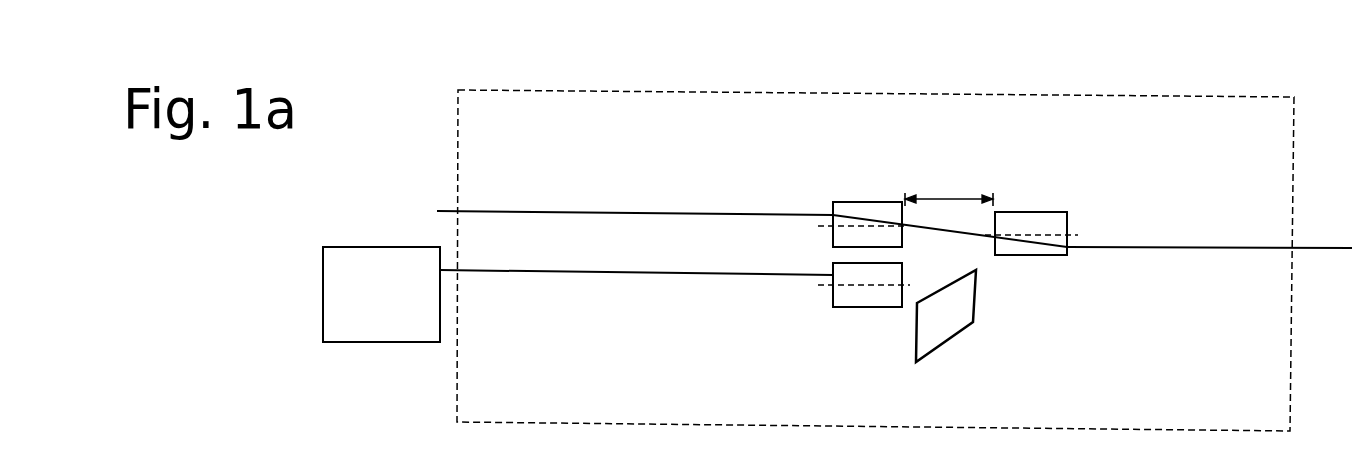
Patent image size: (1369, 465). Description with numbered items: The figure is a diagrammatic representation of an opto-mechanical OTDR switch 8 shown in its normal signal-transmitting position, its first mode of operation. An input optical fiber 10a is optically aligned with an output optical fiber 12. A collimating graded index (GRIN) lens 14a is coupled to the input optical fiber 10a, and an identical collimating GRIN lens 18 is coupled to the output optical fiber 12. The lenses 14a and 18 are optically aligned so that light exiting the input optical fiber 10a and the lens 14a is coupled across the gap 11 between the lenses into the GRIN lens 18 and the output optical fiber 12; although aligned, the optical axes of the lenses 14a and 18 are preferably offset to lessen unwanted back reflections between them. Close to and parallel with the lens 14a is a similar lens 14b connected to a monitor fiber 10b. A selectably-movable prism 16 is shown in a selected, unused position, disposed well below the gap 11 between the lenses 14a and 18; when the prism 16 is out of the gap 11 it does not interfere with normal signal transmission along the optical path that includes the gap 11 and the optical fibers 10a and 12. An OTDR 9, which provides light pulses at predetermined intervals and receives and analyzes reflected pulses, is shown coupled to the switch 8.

The opto-mechanical OTDR switch 8 is at (902, 90).
The OTDR 9 is at (395, 325).
The input optical fiber 10a is at (572, 210).
The monitor fiber 10b is at (687, 275).
The gap 11 is at (957, 197).
The output optical fiber 12 is at (1167, 247).
The collimating graded index (GRIN) lens 14a is at (888, 207).
The collimating GRIN lens 14b is at (875, 302).
The selectably-movable prism 16 is at (933, 338).
The collimating GRIN lens 18 is at (1037, 257).